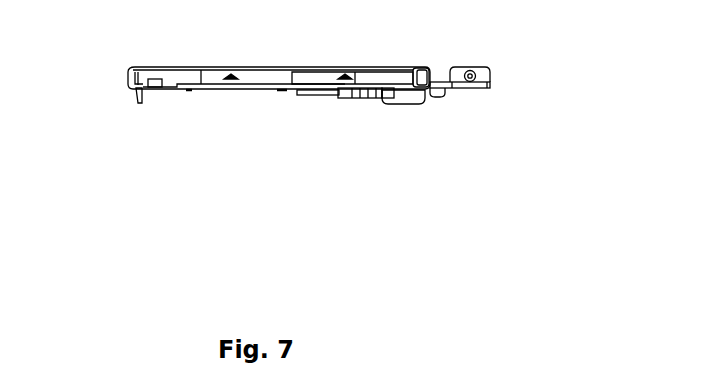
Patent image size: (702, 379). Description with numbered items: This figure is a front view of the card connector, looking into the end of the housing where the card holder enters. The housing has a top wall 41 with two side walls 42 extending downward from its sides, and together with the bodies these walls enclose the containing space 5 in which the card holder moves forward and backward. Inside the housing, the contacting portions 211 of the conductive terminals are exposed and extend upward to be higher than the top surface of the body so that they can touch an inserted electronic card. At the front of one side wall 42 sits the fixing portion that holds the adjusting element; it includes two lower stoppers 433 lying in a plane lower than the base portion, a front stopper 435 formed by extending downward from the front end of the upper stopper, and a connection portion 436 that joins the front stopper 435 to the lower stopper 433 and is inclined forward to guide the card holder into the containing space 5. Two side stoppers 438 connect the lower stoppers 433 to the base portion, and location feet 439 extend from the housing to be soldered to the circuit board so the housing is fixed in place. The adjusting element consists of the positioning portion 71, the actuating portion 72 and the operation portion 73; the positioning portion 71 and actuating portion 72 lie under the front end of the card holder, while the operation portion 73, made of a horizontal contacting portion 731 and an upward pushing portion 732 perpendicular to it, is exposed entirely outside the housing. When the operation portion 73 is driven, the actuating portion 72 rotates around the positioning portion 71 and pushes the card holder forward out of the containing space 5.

The containing space 5 is at (272, 75).
The contacting portion 211 is at (230, 76).
The top wall 41 is at (352, 70).
The side wall 42 is at (427, 70).
The operation portion 73 is at (458, 72).
The contacting portion 731 is at (470, 90).
The pushing portion 732 is at (487, 84).
The positioning portion 71 is at (425, 95).
The location foot 439 is at (138, 100).
The actuating portion 72 is at (302, 95).
The side stopper 438 is at (338, 102).
The lower stopper 433 is at (361, 100).
The front stopper 435 is at (402, 100).
The connection portion 436 is at (410, 105).